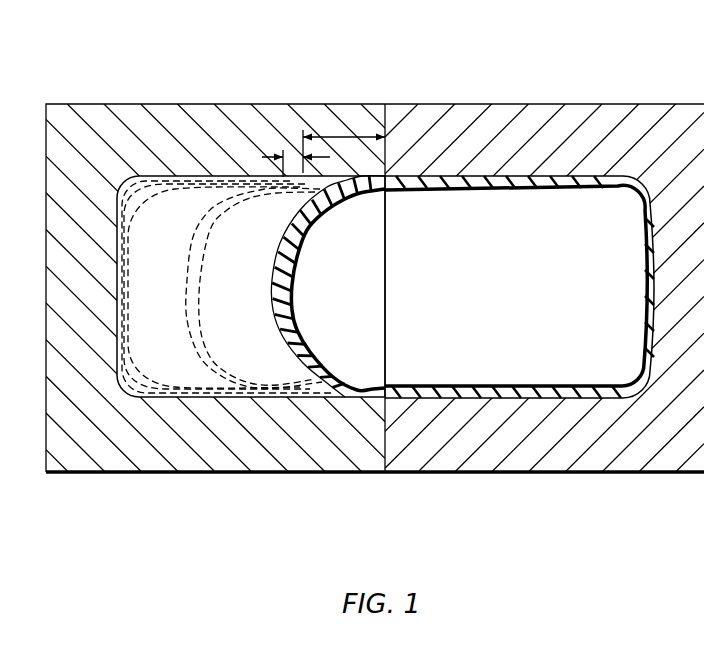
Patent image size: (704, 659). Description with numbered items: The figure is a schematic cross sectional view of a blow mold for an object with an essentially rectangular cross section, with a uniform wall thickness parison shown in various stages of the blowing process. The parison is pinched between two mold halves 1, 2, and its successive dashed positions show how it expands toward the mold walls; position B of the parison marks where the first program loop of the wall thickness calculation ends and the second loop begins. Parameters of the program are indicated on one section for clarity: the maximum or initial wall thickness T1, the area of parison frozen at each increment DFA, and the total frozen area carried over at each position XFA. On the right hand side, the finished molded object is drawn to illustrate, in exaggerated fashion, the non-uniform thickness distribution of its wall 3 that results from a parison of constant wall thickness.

The mold half 1 is at (212, 104).
The mold half 2 is at (541, 104).
The wall of the molded object 3 is at (498, 181).
The position B of the parison B is at (255, 452).
The maximum wall thickness T1 is at (398, 386).
The area of the parison frozen at each count DFA is at (293, 150).
The parison total frozen area at each X(I) carried over XFA is at (340, 137).